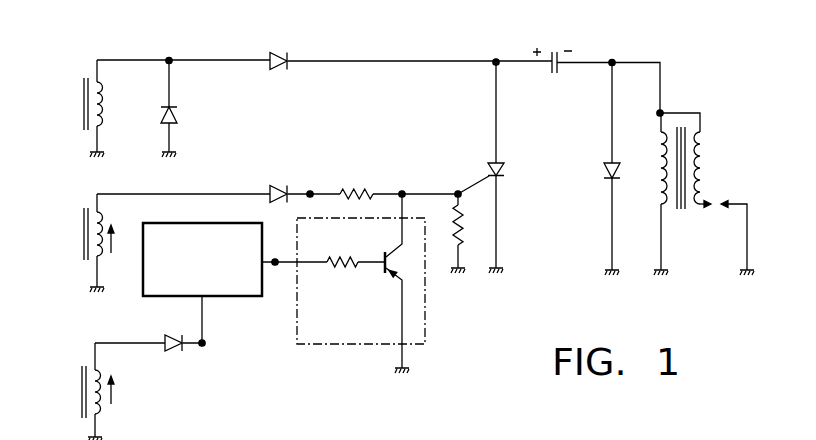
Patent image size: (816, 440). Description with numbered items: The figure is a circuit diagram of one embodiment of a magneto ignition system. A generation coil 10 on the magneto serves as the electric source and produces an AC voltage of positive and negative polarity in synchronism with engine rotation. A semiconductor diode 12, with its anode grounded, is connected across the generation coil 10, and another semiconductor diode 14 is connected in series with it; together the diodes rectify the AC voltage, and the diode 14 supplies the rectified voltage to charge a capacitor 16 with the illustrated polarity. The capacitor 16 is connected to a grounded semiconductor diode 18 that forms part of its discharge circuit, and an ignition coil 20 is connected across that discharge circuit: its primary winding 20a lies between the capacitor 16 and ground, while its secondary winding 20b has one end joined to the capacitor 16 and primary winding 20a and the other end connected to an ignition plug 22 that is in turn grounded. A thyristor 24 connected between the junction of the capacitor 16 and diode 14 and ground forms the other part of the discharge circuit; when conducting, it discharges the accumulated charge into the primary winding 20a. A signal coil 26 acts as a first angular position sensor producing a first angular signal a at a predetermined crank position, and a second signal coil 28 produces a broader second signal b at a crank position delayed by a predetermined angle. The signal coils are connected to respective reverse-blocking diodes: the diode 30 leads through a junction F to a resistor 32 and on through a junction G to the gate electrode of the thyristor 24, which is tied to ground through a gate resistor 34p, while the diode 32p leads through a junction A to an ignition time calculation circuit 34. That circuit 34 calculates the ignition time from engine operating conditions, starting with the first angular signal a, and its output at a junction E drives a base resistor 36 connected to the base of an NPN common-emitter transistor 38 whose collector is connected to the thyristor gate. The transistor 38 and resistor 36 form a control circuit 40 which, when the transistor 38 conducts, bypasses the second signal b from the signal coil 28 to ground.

The generation coil 10 is at (80, 108).
The semiconductor diode 12 is at (178, 111).
The semiconductor diode 14 is at (280, 54).
The capacitor 16 is at (554, 76).
The semiconductor diode 18 is at (604, 175).
The ignition coil 20 is at (691, 173).
The primary winding 20a is at (660, 167).
The secondary winding 20b is at (700, 157).
The ignition plug 22 is at (714, 205).
The thyristor 24 is at (503, 171).
The signal coil 26 is at (81, 388).
The signal coil 28 is at (81, 233).
The semiconductor diode 30 is at (282, 189).
The resistor 32 is at (343, 189).
The semiconductor diode 32p is at (173, 354).
The ignition time calculation circuit 34 is at (246, 319).
The gate resistor 34p is at (474, 233).
The base resistor 36 is at (340, 259).
The transistor 38 is at (403, 262).
The control circuit 40 is at (363, 295).
The junction A is at (205, 348).
The junction E is at (275, 256).
The junction F is at (310, 191).
The junction G is at (403, 192).
The first angular signal a is at (122, 390).
The second signal b is at (120, 239).